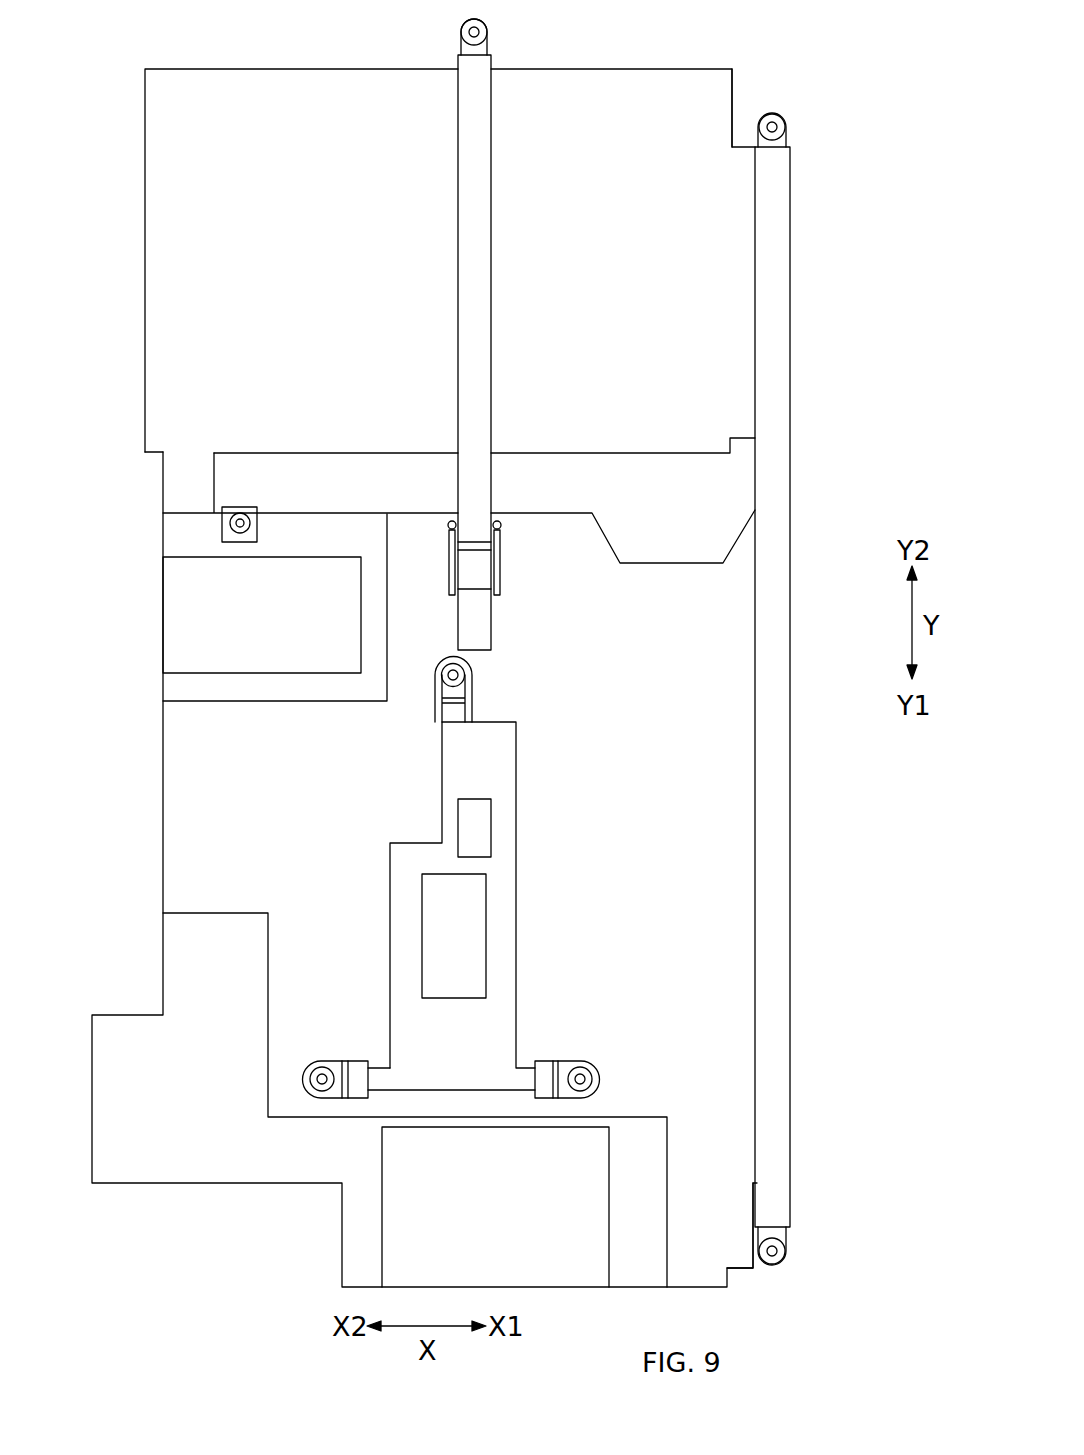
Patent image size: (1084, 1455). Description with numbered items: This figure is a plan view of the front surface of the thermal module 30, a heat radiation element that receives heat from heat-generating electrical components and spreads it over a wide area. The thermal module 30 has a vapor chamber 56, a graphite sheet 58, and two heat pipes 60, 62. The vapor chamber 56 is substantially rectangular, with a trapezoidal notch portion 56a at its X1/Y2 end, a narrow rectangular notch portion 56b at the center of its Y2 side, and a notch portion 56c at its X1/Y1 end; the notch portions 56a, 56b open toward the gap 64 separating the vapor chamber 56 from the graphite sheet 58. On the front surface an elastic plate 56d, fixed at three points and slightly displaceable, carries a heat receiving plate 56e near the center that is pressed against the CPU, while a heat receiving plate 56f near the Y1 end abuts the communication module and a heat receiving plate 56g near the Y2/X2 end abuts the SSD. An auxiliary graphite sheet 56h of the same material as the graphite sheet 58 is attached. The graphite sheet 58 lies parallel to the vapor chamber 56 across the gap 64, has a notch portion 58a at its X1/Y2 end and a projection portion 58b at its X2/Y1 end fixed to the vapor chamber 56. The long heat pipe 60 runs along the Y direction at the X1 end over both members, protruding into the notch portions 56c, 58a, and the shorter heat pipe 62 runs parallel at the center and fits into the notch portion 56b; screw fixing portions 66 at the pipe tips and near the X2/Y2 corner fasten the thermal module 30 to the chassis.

The thermal module 30 is at (830, 74).
The vapor chamber 56 is at (220, 805).
The notch portion 56a is at (690, 561).
The notch portion 56b is at (484, 566).
The notch portion 56c is at (757, 1262).
The elastic plate 56d is at (498, 1018).
The heat receiving plate 56e is at (458, 958).
The heat receiving plate 56f is at (573, 1248).
The heat receiving plate 56g is at (183, 598).
The auxiliary graphite sheet 56h is at (185, 690).
The graphite sheet 58 is at (163, 137).
The notch portion 58a is at (733, 105).
The projection portion 58b is at (170, 480).
The heat pipe 60 is at (770, 475).
The heat pipe 62 is at (480, 148).
The gap 64 is at (555, 487).
The screw fixing portion 66 is at (462, 33).